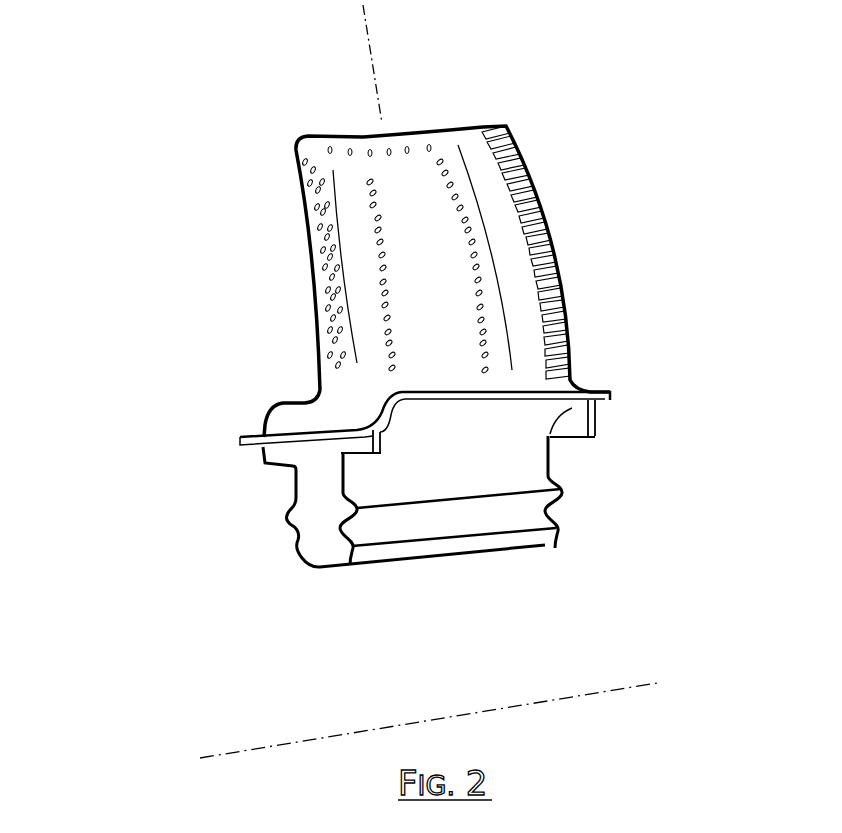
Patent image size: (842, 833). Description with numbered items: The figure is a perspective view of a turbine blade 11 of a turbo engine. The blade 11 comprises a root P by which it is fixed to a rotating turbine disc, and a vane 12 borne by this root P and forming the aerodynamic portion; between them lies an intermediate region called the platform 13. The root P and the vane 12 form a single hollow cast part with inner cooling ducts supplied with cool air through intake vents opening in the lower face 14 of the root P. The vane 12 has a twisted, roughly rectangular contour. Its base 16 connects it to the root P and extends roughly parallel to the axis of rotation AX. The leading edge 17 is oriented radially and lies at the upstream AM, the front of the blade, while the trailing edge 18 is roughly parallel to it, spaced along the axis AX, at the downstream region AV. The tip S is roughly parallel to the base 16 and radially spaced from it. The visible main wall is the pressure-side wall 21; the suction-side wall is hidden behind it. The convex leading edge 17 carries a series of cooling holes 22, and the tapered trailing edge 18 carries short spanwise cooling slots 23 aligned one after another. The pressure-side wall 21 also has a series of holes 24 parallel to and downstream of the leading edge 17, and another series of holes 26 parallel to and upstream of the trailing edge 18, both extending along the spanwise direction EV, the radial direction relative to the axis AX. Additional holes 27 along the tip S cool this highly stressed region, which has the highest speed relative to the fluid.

The blade 11 is at (143, 327).
The vane 12 is at (565, 127).
The platform 13 is at (613, 397).
The lower face 14 is at (432, 560).
The base 16 is at (460, 372).
The leading edge 17 is at (300, 198).
The trailing edge 18 is at (533, 172).
The pressure-side wall 21 is at (424, 265).
The cooling holes 22 is at (332, 342).
The cooling slots 23 is at (567, 335).
The holes 24 is at (374, 193).
The holes 26 is at (483, 355).
The additional holes 27 is at (429, 144).
The spanwise direction EV is at (365, 25).
The tip S is at (370, 137).
The downstream region AV is at (542, 233).
The upstream AM is at (325, 257).
The root P is at (460, 472).
The axis of rotation AX is at (235, 752).